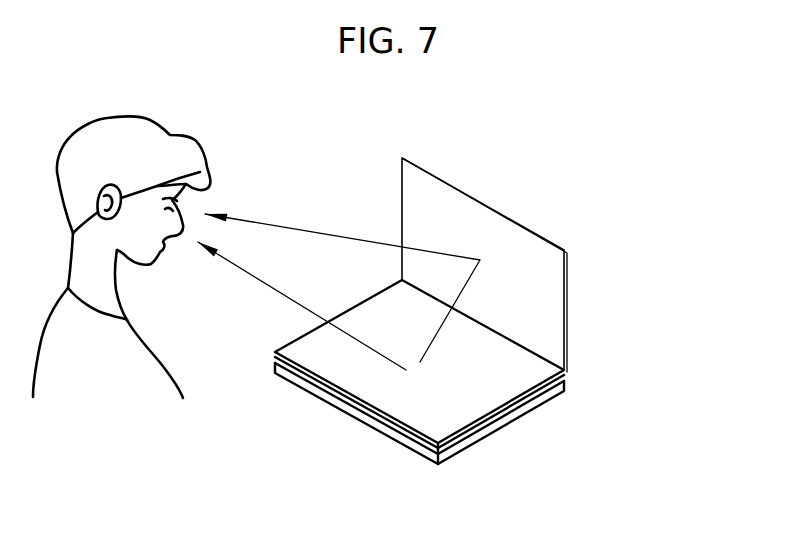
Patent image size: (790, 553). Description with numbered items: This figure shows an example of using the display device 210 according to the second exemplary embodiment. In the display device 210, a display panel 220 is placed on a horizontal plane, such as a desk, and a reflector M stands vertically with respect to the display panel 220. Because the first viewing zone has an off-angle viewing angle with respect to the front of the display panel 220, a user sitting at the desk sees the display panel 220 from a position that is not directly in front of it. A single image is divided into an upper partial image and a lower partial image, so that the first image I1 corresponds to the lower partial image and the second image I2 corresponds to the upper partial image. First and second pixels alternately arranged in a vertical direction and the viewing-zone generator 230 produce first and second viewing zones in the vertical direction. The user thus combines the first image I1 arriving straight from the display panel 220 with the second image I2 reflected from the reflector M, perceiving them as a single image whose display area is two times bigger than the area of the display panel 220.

The display device 210 is at (510, 328).
The display panel 220 is at (470, 448).
The viewing-zone generator 230 is at (513, 405).
The reflector M is at (532, 227).
The first image I1 is at (302, 306).
The second image I2 is at (342, 279).